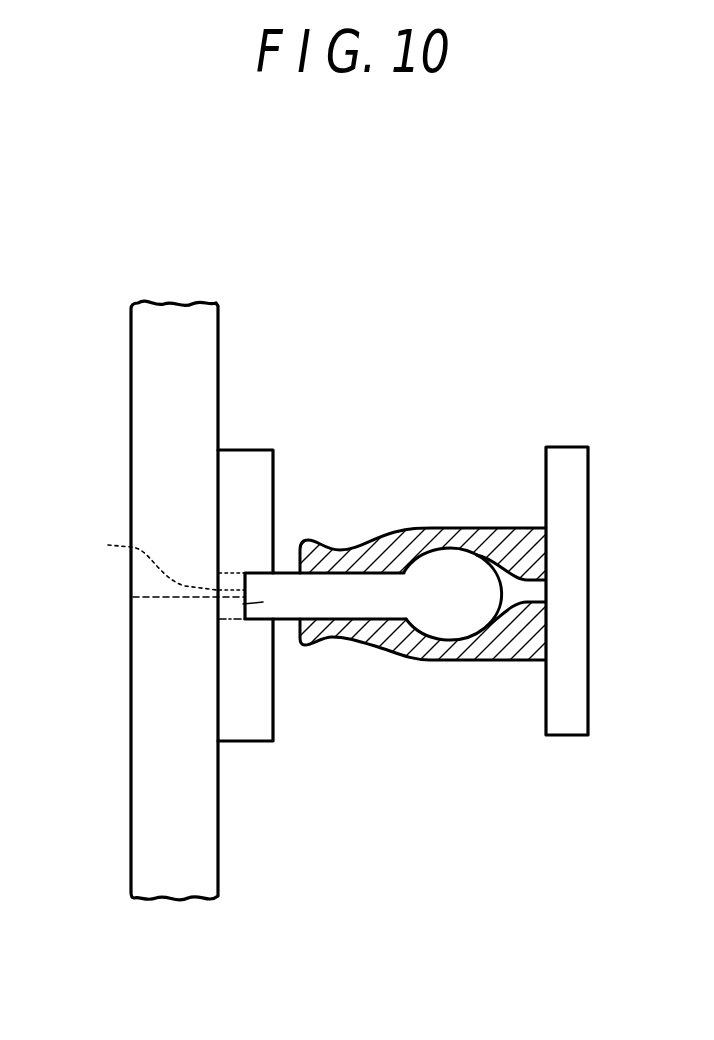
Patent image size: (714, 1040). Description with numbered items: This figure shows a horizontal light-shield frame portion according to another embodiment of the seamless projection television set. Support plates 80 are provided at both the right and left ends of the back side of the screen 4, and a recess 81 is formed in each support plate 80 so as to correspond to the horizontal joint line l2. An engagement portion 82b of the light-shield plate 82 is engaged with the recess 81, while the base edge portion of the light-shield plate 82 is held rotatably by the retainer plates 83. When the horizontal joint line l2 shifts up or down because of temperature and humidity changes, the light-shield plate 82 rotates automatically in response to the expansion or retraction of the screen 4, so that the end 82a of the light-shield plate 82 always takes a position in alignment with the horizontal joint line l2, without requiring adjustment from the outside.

The screen 4 is at (223, 840).
The support plate 80 is at (260, 476).
The recess 81 is at (262, 573).
The light-shield plate 82 is at (452, 627).
The end of the light-shield plate 82a is at (138, 561).
The engagement portion 82b is at (245, 604).
The retainer plate 83 is at (455, 527).
The horizontal joint line l2 is at (161, 598).